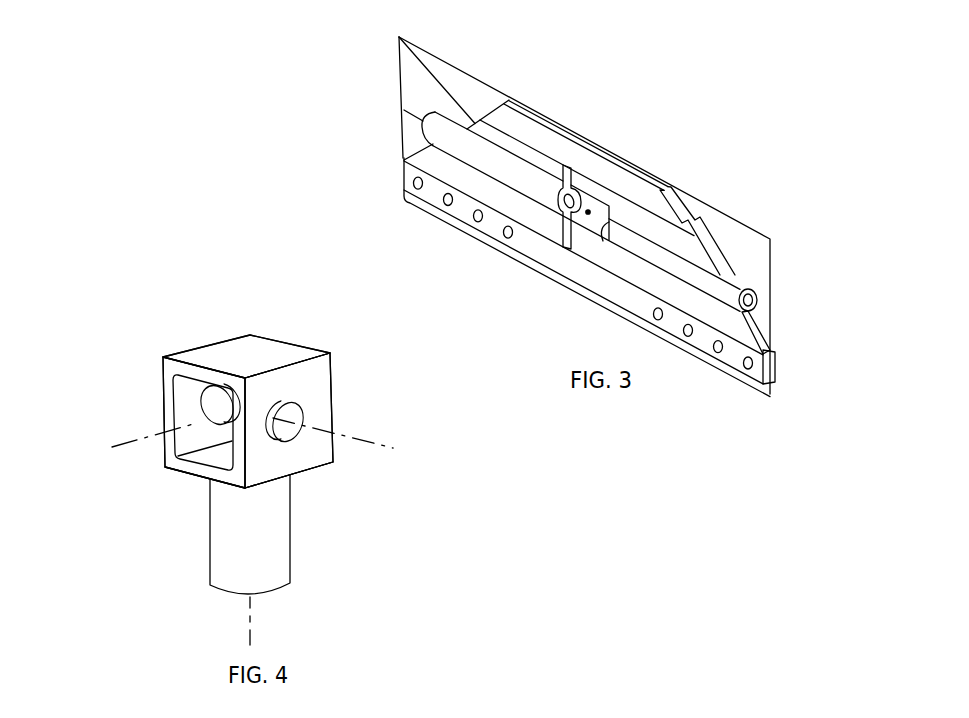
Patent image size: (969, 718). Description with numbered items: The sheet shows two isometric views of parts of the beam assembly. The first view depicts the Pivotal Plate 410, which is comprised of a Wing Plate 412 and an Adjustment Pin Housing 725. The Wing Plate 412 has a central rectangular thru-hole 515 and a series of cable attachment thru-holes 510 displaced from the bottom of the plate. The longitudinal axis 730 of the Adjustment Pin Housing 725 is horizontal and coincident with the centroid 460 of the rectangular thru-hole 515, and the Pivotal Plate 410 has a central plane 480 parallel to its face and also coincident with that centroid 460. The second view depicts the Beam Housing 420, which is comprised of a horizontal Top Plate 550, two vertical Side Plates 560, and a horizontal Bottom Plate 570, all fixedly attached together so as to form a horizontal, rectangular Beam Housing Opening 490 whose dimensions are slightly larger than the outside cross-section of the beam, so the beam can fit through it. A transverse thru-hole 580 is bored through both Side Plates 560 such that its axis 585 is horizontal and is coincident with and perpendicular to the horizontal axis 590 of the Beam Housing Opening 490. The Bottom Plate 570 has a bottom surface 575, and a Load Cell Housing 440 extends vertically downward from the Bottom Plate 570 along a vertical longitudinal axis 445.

In FIG. 3, the Pivotal Plate 410 is at (594, 135).
In FIG. 3, the Wing Plate 412 is at (399, 52).
In FIG. 3, the central plane 480 is at (477, 78).
In FIG. 3, the cable attachment thru-holes 510 is at (407, 173).
In FIG. 3, the central rectangular thru-hole 515 is at (594, 187).
In FIG. 3, the centroid 460 is at (592, 209).
In FIG. 3, the Adjustment Pin Housing 725 is at (737, 275).
In FIG. 3, the longitudinal axis 730 is at (803, 332).
In FIG. 4, the Beam Housing 420 is at (252, 345).
In FIG. 4, the Top Plate 550 is at (210, 343).
In FIG. 4, the Side Plates 560 is at (163, 408).
In FIG. 4, the Beam Housing Opening 490 is at (193, 418).
In FIG. 4, the horizontal axis 590 is at (140, 438).
In FIG. 4, the Bottom Plate 570 is at (178, 467).
In FIG. 4, the bottom surface 575 is at (198, 479).
In FIG. 4, the transverse thru-hole 580 is at (305, 415).
In FIG. 4, the axis 585 is at (358, 438).
In FIG. 4, the Load Cell Housing 440 is at (290, 535).
In FIG. 4, the vertical longitudinal axis 445 is at (252, 628).